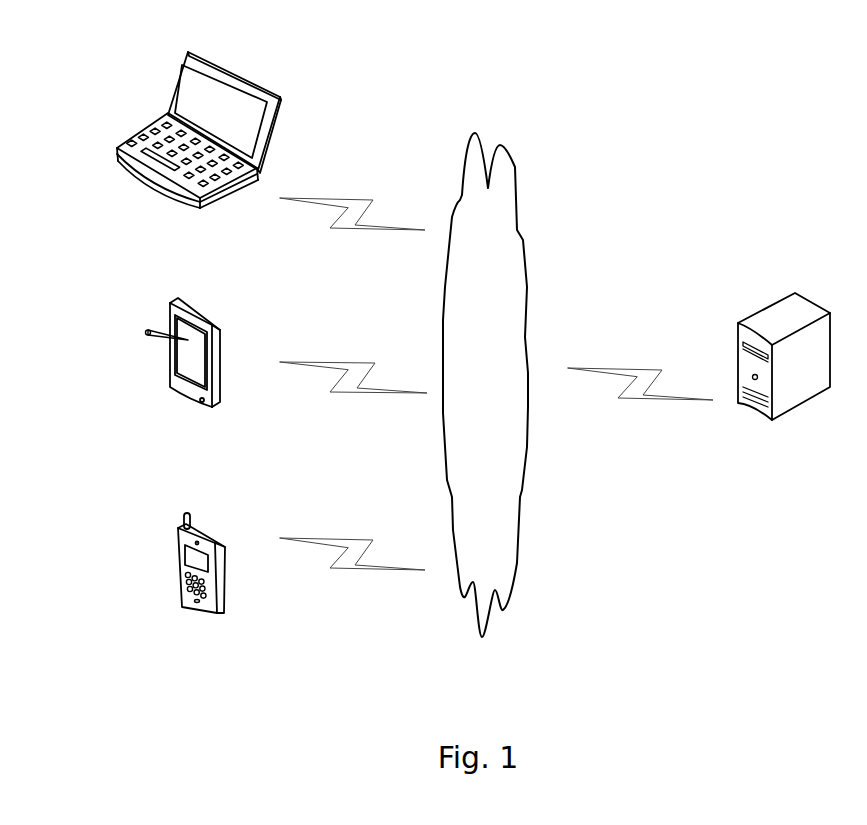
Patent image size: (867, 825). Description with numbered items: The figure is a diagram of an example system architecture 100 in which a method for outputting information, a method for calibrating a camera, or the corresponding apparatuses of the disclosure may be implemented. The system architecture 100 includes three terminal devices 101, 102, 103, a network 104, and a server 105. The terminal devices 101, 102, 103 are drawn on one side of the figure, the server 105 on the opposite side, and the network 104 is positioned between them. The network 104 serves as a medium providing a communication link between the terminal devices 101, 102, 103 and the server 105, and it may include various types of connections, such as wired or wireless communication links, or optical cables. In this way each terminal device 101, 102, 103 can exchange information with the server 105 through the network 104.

The system architecture 100 is at (700, 38).
The terminal device 101 is at (201, 584).
The terminal device 102 is at (183, 373).
The terminal device 103 is at (199, 149).
The network 104 is at (485, 385).
The server 105 is at (784, 379).